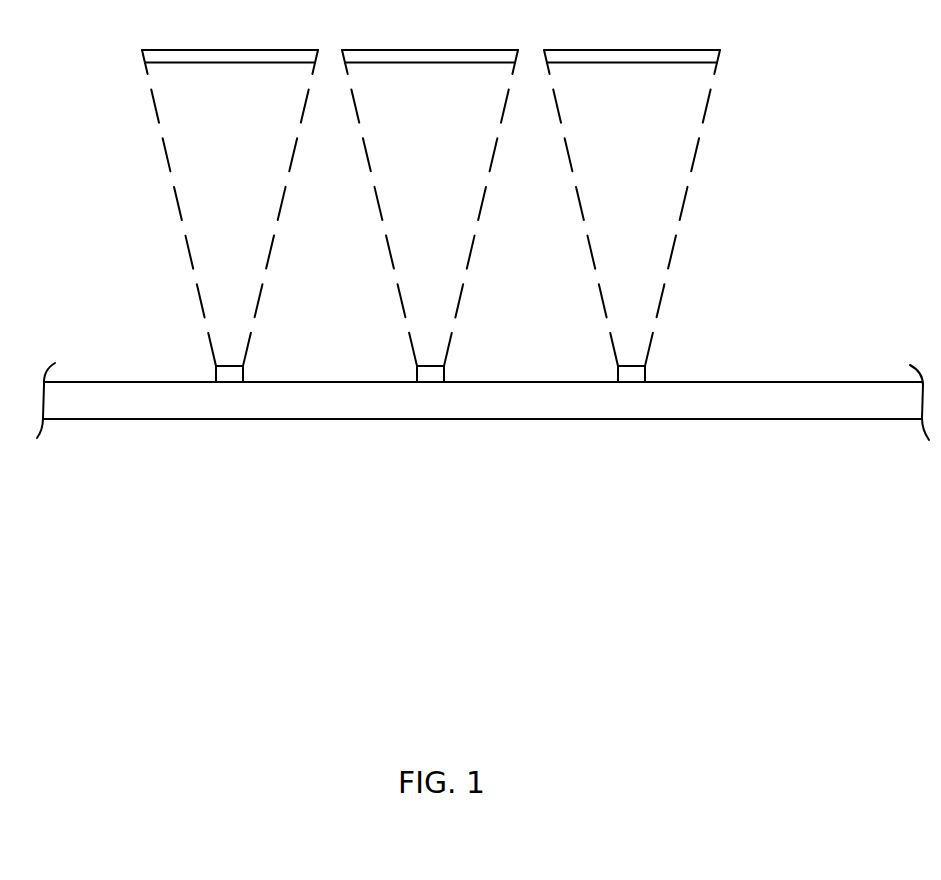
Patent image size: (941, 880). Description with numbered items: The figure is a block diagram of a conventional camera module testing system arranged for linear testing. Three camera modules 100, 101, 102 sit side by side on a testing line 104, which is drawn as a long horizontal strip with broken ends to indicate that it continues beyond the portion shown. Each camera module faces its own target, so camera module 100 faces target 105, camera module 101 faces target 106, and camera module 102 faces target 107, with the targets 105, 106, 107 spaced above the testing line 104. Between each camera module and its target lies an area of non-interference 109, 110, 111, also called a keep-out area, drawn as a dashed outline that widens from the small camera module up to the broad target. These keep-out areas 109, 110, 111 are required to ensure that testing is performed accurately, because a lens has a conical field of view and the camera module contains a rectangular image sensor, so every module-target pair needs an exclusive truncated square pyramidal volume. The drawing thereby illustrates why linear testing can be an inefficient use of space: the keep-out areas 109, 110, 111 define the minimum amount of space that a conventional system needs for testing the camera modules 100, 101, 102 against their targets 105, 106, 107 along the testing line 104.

The camera module 100 is at (244, 372).
The camera module 101 is at (445, 372).
The camera module 102 is at (646, 372).
The testing line 104 is at (420, 409).
The target 105 is at (211, 50).
The target 106 is at (428, 50).
The target 107 is at (632, 50).
The area of non-interference 109 is at (254, 149).
The area of non-interference 110 is at (453, 149).
The area of non-interference 111 is at (654, 149).